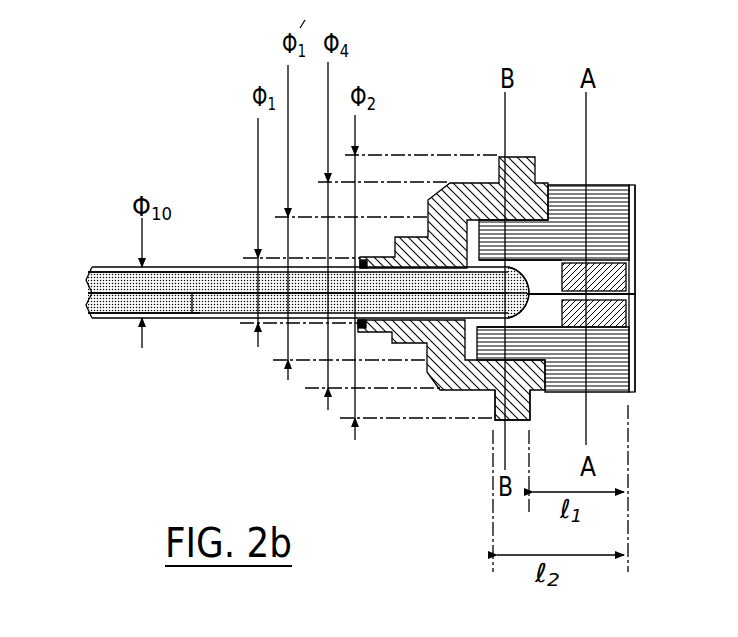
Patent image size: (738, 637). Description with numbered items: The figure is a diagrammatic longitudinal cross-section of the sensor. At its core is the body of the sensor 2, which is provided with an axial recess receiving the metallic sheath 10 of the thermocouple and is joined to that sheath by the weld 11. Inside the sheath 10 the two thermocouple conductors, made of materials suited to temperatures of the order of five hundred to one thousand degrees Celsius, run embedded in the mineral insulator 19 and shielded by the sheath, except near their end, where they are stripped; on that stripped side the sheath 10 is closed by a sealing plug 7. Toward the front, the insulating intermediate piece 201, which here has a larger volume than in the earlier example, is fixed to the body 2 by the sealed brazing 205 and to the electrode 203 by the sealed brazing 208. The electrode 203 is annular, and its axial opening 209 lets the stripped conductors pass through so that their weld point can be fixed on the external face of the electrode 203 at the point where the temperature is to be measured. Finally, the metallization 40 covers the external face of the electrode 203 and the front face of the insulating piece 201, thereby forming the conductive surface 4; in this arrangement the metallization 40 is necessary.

The body of the sensor 2 is at (457, 195).
The conductive surface 4 is at (634, 363).
The sealing plug 7 is at (524, 270).
The metallic sheath 10 is at (245, 320).
The weld 11 is at (353, 325).
The mineral insulator 19 is at (119, 302).
The metallization 40 is at (633, 385).
The insulating intermediate piece 201 is at (607, 208).
The electrode 203 is at (620, 283).
The sealed brazing 205 is at (493, 365).
The sealed brazing 208 is at (608, 256).
The axial opening 209 is at (596, 306).